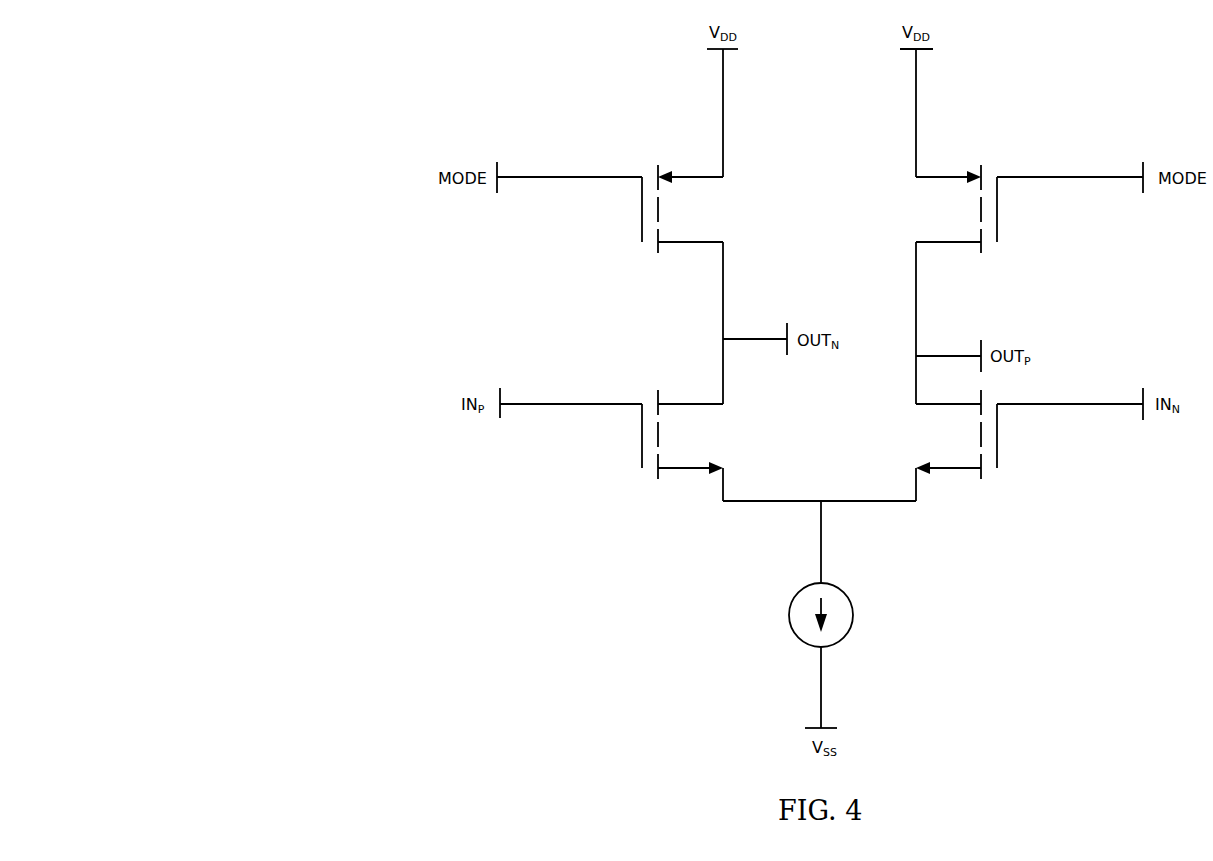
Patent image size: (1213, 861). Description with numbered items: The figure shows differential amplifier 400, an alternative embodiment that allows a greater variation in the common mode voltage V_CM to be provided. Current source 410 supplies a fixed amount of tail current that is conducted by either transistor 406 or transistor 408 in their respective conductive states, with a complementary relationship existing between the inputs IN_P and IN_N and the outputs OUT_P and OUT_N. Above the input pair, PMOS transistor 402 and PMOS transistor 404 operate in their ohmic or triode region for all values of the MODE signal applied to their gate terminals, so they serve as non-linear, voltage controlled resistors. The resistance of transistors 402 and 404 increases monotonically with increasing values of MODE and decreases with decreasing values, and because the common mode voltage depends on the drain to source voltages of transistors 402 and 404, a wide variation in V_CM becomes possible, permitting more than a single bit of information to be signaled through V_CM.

The differential amplifier 400 is at (311, 675).
The PMOS transistor 402 is at (707, 242).
The PMOS transistor 404 is at (950, 242).
The transistor 406 is at (690, 471).
The transistor 408 is at (950, 471).
The current source 410 is at (837, 583).